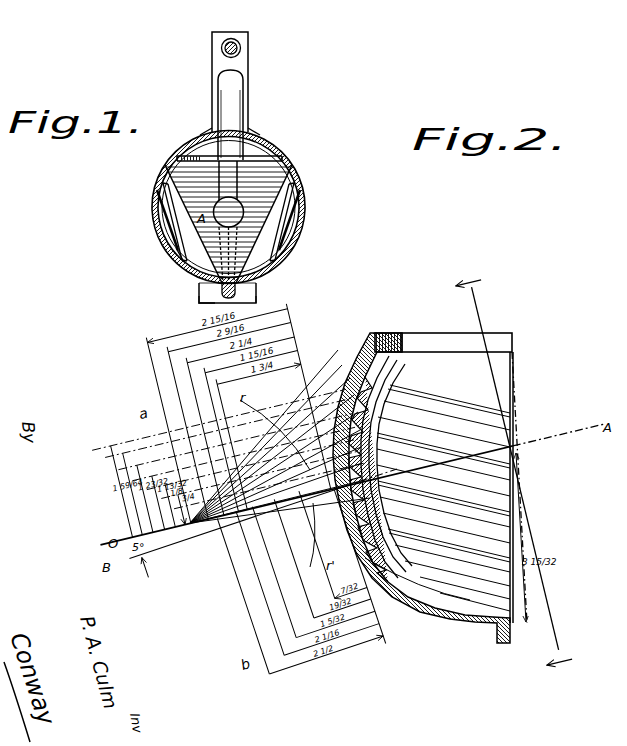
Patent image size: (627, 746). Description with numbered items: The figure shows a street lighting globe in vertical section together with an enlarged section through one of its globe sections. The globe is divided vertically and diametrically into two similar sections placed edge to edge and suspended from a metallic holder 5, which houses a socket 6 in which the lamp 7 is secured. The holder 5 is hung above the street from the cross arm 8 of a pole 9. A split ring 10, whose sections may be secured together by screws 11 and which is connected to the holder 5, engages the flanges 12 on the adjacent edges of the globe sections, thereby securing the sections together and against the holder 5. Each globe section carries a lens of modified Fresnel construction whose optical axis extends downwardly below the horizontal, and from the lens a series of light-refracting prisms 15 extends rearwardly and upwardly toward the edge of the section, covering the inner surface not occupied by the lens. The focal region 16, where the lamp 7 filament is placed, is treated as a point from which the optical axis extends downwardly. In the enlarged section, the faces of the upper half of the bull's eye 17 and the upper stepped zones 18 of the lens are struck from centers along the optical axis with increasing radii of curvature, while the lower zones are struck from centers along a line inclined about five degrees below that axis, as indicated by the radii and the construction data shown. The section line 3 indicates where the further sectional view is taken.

In FIG. 2, the section line 3- 3 is at (514, 473).
In FIG. 1, the metallic holder 5 is at (262, 156).
In FIG. 1, the socket 6 is at (243, 142).
In FIG. 1, the lamp 7 is at (238, 214).
In FIG. 1, the cross arm 8 is at (241, 49).
In FIG. 1, the pole 9 is at (258, 290).
In FIG. 1, the split ring 10 is at (222, 292).
In FIG. 1, the screws 11 is at (258, 300).
In FIG. 1, the flanges 12 is at (214, 301).
In FIG. 1, the light-refracting prisms 15 is at (170, 183).
In FIG. 2, the light-refracting prisms 15 is at (455, 400).
In FIG. 1, the focal region 16 is at (178, 251).
In FIG. 2, the focal region 16 is at (550, 440).
In FIG. 1, the bull's eye 17 is at (165, 193).
In FIG. 2, the bull's eye 17 is at (367, 427).
In FIG. 2, the upper stepped zones 18 is at (362, 402).